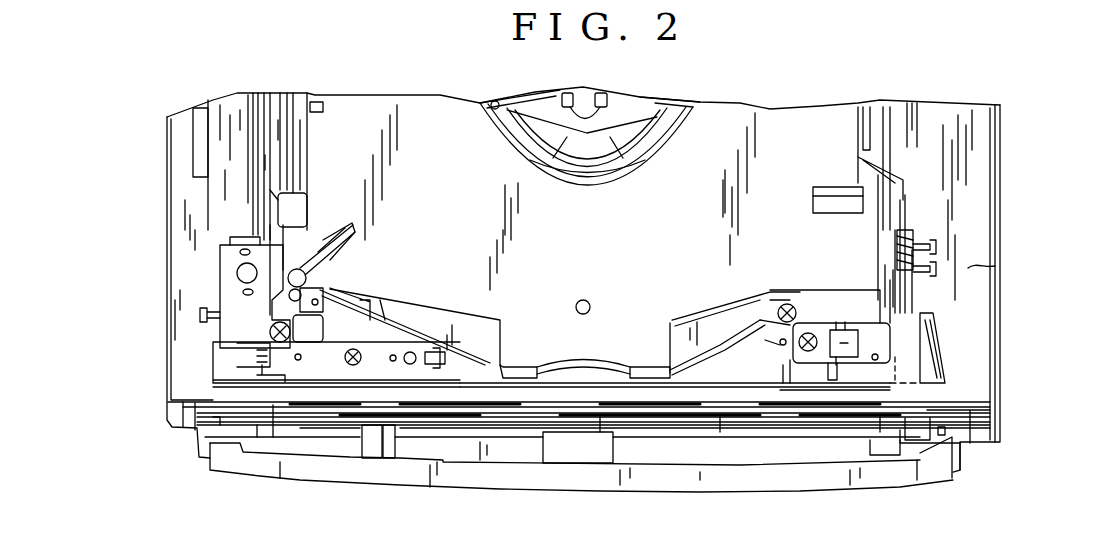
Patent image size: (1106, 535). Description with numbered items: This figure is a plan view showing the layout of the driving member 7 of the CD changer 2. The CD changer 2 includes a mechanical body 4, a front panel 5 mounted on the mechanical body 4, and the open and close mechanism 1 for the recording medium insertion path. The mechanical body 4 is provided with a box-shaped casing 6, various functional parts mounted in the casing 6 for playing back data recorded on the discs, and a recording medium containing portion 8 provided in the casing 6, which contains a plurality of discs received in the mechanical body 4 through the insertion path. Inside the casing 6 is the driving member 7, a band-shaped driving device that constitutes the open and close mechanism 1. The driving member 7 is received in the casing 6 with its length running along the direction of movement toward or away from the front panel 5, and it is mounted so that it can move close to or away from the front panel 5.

The open and close mechanism 1 is at (968, 458).
The CD changer 2 is at (1003, 175).
The mechanical body 4 is at (1000, 208).
The front panel 5 is at (953, 482).
The casing 6 is at (968, 268).
The driving member 7 is at (932, 400).
The recording medium containing portion 8 is at (773, 150).